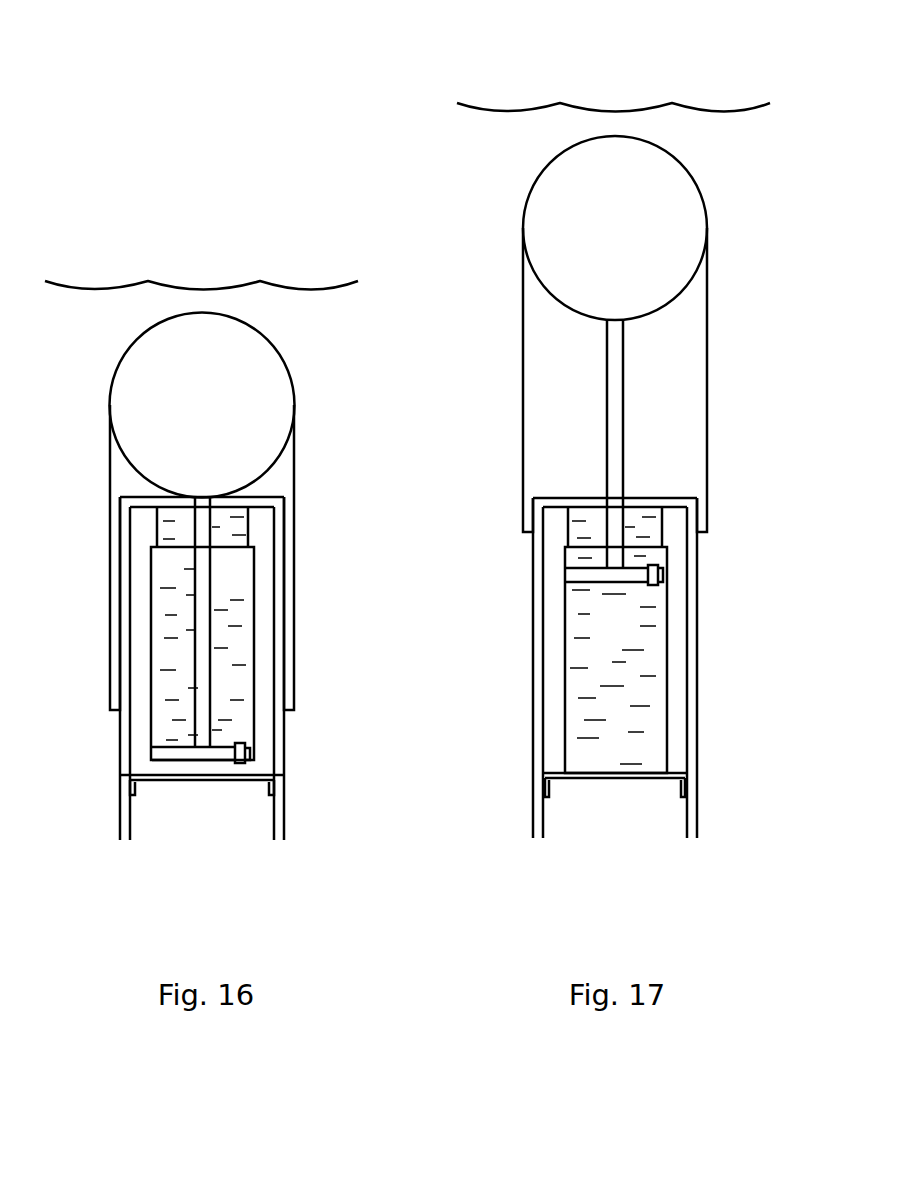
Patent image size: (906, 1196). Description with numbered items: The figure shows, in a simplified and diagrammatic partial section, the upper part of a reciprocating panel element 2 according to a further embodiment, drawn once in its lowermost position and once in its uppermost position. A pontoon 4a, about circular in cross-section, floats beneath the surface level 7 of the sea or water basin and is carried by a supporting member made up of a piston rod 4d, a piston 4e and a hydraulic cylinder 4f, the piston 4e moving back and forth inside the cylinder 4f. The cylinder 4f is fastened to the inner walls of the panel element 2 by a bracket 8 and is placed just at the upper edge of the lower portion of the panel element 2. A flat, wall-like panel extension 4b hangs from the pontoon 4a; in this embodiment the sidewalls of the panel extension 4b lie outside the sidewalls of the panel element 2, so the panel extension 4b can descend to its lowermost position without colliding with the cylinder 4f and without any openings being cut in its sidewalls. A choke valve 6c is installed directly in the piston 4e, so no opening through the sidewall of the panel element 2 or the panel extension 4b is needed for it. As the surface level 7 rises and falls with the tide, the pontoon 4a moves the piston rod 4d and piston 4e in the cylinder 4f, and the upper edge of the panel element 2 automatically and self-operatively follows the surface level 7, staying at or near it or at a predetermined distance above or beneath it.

In FIG. 16, the surface level 7 is at (183, 285).
In FIG. 17, the surface level 7 is at (643, 105).
In FIG. 16, the pontoon 4a is at (122, 387).
In FIG. 17, the pontoon 4a is at (530, 210).
In FIG. 16, the panel extension 4b is at (292, 483).
In FIG. 17, the panel extension 4b is at (703, 345).
In FIG. 16, the piston rod 4d is at (202, 583).
In FIG. 17, the piston rod 4d is at (621, 420).
In FIG. 16, the piston 4e is at (155, 755).
In FIG. 17, the piston 4e is at (568, 575).
In FIG. 16, the cylinder 4f is at (242, 620).
In FIG. 17, the cylinder 4f is at (658, 742).
In FIG. 16, the choke valve 6c is at (250, 748).
In FIG. 17, the choke valve 6c is at (665, 573).
In FIG. 16, the bracket 8 is at (130, 778).
In FIG. 17, the bracket 8 is at (545, 778).
In FIG. 16, the panel element 2 is at (282, 826).
In FIG. 17, the panel element 2 is at (693, 653).